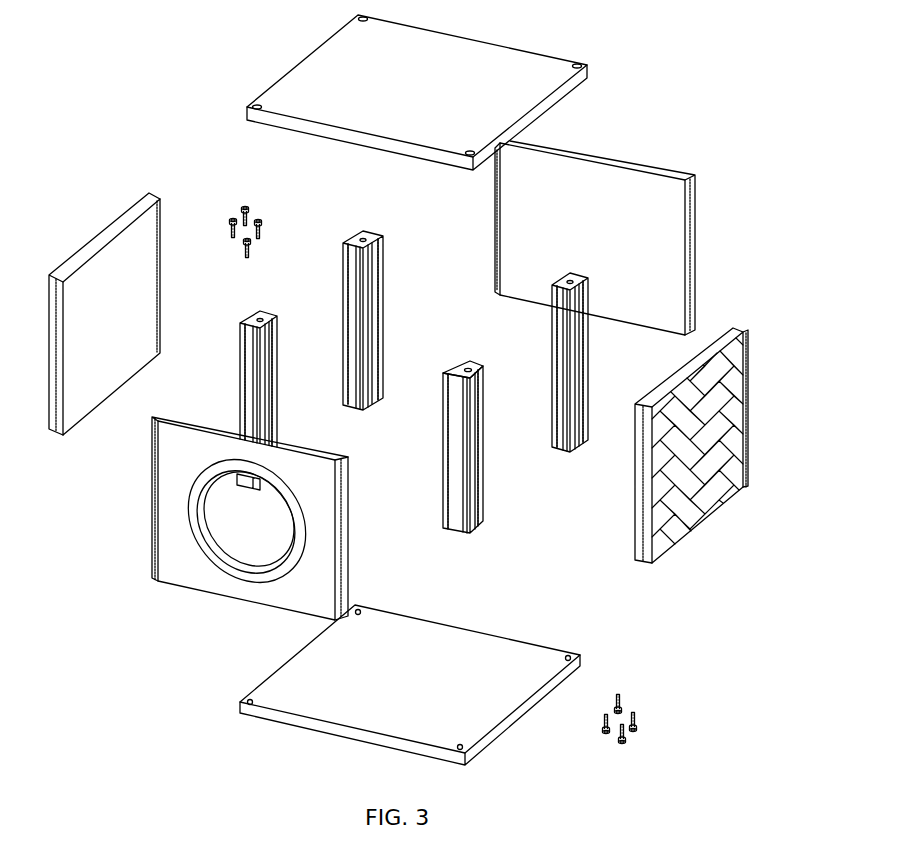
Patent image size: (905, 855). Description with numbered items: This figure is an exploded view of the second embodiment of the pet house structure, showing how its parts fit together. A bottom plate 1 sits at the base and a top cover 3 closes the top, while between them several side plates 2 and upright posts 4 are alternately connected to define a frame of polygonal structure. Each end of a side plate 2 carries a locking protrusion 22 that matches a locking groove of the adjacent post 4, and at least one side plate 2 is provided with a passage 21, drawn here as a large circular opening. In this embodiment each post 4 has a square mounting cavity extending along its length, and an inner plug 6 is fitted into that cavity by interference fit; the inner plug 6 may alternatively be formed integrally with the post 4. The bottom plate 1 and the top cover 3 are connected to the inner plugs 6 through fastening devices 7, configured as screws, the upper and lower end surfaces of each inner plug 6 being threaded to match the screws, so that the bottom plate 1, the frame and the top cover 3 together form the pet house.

The bottom plate 1 is at (405, 718).
The side plate 2 is at (676, 510).
The top cover 3 is at (478, 65).
The post 4 is at (480, 441).
The inner plug 6 is at (474, 369).
The fastening device 7 is at (263, 232).
The passage 21 is at (228, 532).
The locking protrusion 22 is at (347, 495).